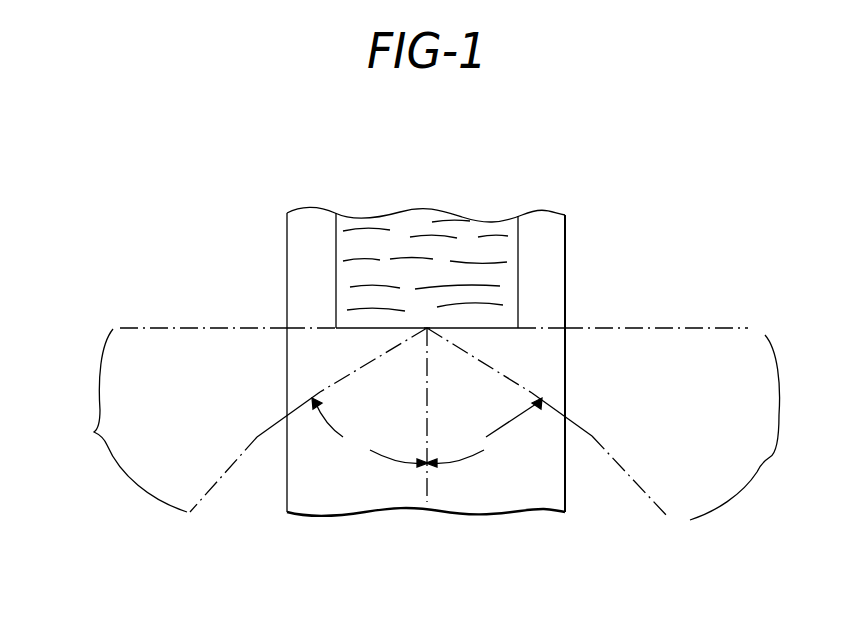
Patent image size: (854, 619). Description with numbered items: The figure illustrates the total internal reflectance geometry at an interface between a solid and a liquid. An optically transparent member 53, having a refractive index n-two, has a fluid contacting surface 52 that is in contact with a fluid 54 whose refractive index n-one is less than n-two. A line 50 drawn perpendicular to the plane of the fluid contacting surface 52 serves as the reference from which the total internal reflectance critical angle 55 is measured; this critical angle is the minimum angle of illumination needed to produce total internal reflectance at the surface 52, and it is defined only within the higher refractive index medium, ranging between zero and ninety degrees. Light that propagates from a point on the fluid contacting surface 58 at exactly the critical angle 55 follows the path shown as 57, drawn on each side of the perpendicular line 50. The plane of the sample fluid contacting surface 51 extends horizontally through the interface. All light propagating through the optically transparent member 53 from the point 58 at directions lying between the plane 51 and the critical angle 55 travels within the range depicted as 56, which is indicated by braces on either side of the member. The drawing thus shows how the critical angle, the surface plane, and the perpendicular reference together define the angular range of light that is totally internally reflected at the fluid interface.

The line perpendicular to the plane of the fluid contacting surface 50 is at (427, 480).
The plane of the sample fluid contacting surface 51 is at (146, 327).
The fluid contacting surface 52 is at (360, 327).
The optically transparent member 53 is at (296, 512).
The fluid 54 is at (470, 221).
The total internal reflectance critical angle 55 is at (427, 415).
The range of light propagation 56 is at (431, 424).
The light path at the critical angle 57 is at (348, 373).
The point on the fluid contacting surface 58 is at (427, 328).